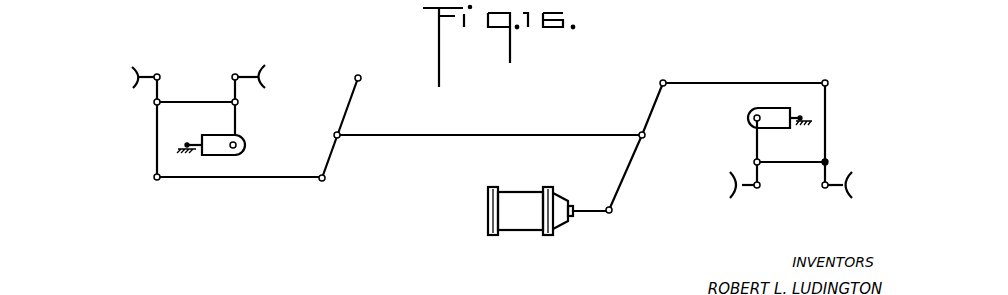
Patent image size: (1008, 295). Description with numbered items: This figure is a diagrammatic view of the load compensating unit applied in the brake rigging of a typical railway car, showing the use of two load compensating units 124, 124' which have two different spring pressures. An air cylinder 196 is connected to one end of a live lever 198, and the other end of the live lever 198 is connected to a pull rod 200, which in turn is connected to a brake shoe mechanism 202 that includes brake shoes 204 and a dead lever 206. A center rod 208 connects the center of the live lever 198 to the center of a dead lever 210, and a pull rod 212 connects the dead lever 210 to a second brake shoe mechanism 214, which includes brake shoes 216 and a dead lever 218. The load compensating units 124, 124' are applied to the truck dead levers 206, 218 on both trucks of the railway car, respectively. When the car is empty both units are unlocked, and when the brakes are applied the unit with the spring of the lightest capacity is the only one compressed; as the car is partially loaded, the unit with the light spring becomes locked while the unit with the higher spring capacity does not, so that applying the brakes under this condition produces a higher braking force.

The load compensating unit 124 is at (755, 111).
The load compensating unit 124' is at (237, 150).
The air cylinder 196 is at (518, 231).
The live lever 198 is at (622, 188).
The pull rod 200 is at (737, 80).
The brake shoe mechanism 202 is at (845, 100).
The brake shoes 204 is at (737, 196).
The dead lever 206 is at (756, 145).
The center rod 208 is at (483, 133).
The dead lever 210 is at (348, 110).
The pull rod 212 is at (203, 180).
The brake shoe mechanism 214 is at (205, 72).
The brake shoes 216 is at (136, 88).
The dead lever 218 is at (237, 116).